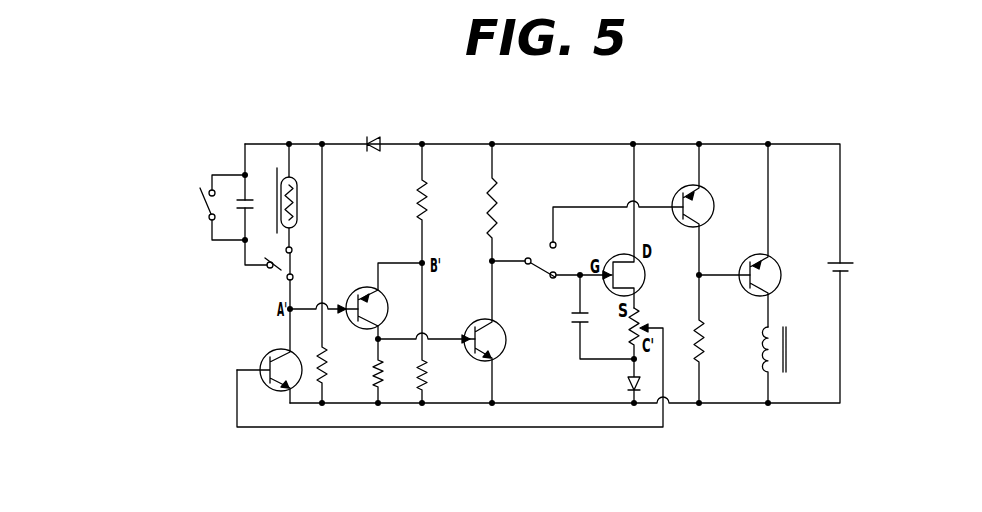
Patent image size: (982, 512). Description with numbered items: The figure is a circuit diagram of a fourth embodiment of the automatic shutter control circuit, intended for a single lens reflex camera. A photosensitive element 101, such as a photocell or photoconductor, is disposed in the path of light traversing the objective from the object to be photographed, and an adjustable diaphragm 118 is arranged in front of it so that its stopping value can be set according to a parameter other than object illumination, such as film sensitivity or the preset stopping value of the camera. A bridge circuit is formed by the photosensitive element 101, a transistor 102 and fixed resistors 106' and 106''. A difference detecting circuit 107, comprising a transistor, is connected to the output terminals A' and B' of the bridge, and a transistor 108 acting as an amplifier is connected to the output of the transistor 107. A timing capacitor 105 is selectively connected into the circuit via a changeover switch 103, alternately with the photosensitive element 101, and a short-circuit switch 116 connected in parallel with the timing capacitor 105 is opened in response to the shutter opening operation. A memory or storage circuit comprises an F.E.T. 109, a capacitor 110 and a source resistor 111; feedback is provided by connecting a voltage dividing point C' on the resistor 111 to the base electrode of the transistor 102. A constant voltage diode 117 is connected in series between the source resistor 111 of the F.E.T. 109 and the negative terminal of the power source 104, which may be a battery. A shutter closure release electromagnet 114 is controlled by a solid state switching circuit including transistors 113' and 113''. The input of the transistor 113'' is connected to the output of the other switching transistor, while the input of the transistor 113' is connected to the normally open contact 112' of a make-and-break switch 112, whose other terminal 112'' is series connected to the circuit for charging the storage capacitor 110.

The photosensitive element 101 is at (302, 206).
The transistor 102 is at (278, 385).
The changeover switch 103 is at (275, 278).
The power or voltage source 104 is at (835, 254).
The timing capacitor 105 is at (255, 207).
The fixed resistor 106' is at (435, 203).
The fixed resistor 106'' is at (436, 333).
The difference detecting circuit 107 is at (366, 326).
The transistor 108 is at (465, 328).
The F.E.T. 109 is at (635, 226).
The capacitor 110 is at (570, 320).
The source resistor 111 is at (644, 332).
The make-and-break switch 112 is at (536, 256).
The normally open contact 112' is at (616, 226).
The other terminal 112'' is at (577, 287).
The transistor 113' is at (705, 209).
The transistor 113'' is at (774, 235).
The shutter closure release electromagnet 114 is at (784, 365).
The short-circuit switch 116 is at (211, 207).
The constant voltage diode 117 is at (622, 381).
The adjustable diaphragm 118 is at (277, 176).